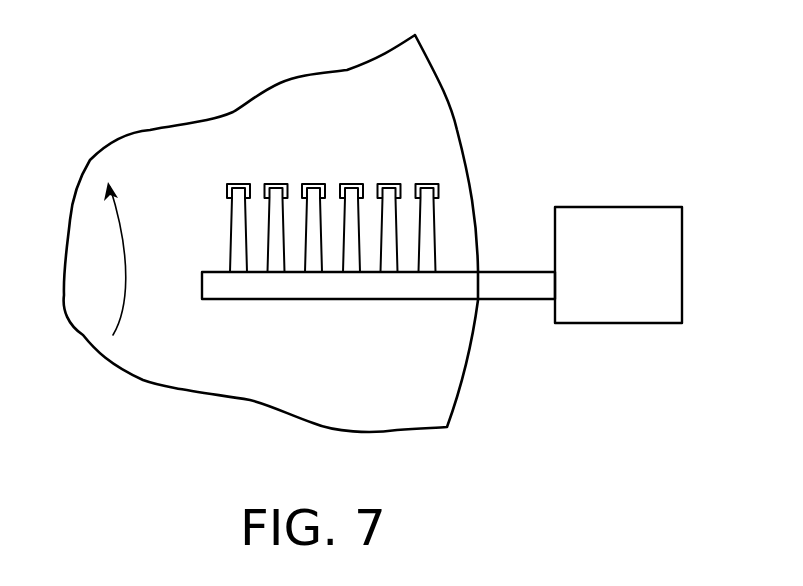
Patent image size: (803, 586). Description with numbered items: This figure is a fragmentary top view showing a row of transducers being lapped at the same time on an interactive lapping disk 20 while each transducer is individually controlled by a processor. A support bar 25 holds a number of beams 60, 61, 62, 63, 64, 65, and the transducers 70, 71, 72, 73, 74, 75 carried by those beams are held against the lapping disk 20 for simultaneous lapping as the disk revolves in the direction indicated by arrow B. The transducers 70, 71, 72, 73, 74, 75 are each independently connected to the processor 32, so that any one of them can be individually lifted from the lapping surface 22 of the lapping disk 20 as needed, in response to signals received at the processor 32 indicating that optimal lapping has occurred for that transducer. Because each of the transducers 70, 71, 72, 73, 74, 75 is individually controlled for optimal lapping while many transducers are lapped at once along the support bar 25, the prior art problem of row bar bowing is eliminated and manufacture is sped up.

The lapping disk 20 is at (373, 233).
The lapping surface 22 is at (187, 214).
The support bar 25 is at (514, 300).
The processor 32 is at (625, 207).
The beam 60 is at (233, 259).
The beam 61 is at (273, 259).
The beam 62 is at (312, 257).
The beam 63 is at (352, 256).
The beam 64 is at (388, 258).
The beam 65 is at (428, 250).
The transducer 70 is at (238, 184).
The transducer 71 is at (276, 184).
The transducer 72 is at (313, 184).
The transducer 73 is at (351, 184).
The transducer 74 is at (389, 184).
The transducer 75 is at (427, 184).
The arrow B is at (128, 258).